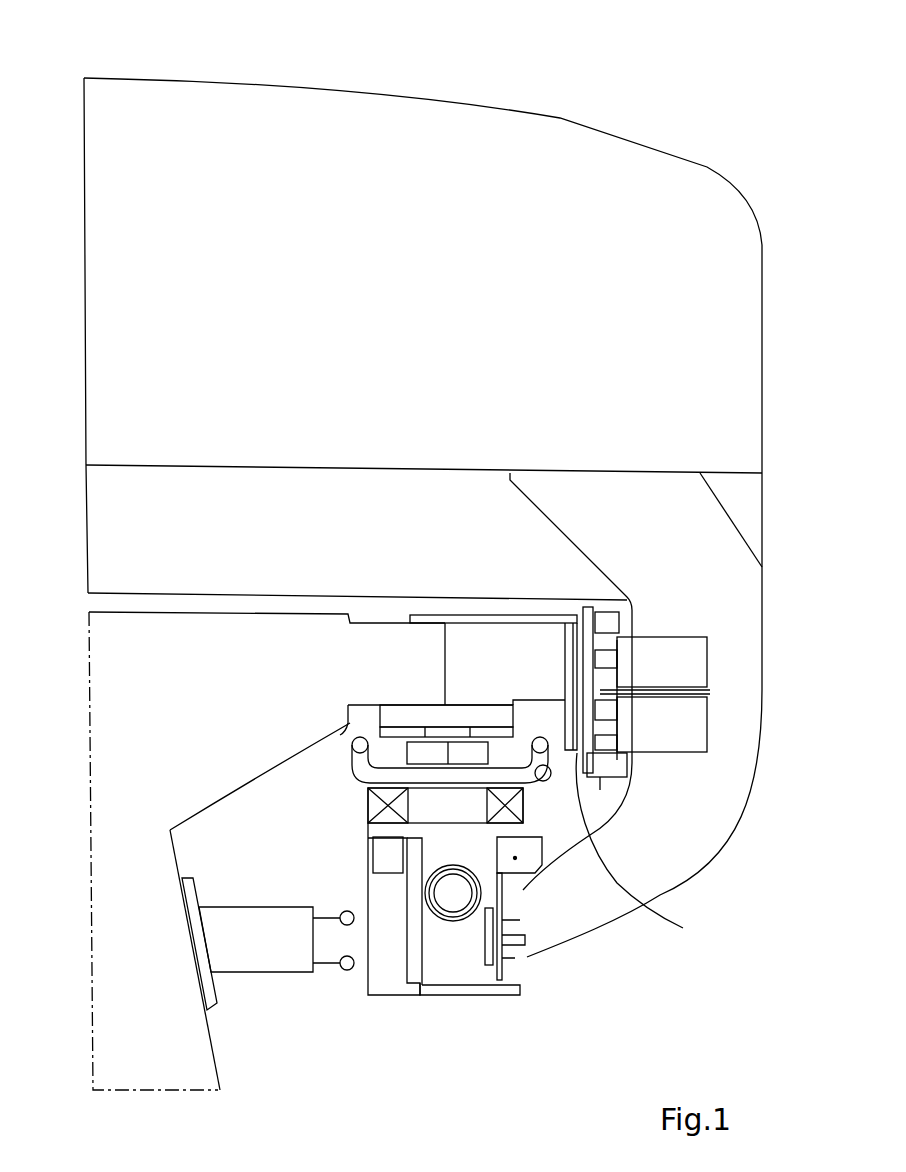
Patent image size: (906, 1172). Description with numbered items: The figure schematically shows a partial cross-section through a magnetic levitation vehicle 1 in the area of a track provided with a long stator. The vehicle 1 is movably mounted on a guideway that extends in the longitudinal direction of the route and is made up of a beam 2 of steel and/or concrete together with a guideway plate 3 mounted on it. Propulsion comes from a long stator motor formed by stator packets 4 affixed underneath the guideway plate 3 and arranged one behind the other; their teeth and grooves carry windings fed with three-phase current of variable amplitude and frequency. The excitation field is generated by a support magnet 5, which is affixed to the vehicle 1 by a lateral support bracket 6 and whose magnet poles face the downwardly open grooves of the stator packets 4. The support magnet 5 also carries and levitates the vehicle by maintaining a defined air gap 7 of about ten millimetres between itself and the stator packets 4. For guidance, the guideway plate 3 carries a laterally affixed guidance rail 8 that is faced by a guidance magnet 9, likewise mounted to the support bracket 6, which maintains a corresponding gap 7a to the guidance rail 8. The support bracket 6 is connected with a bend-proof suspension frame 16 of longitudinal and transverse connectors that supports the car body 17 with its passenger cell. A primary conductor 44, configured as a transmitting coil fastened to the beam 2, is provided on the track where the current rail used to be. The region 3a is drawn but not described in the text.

The magnetic levitation vehicle 1 is at (440, 91).
The beam 2 is at (118, 967).
The guideway plate 3 is at (522, 605).
The receiving space 3a is at (462, 690).
The stator packet 4 is at (430, 757).
The support magnet 5 is at (455, 800).
The support bracket 6 is at (698, 582).
The air gap 7 is at (507, 783).
The gap 7a is at (655, 850).
The guidance rail 8 is at (572, 708).
The guidance magnet 9 is at (618, 682).
The suspension frame 16 is at (145, 542).
The car body 17 is at (138, 282).
The primary conductor 44 is at (335, 975).